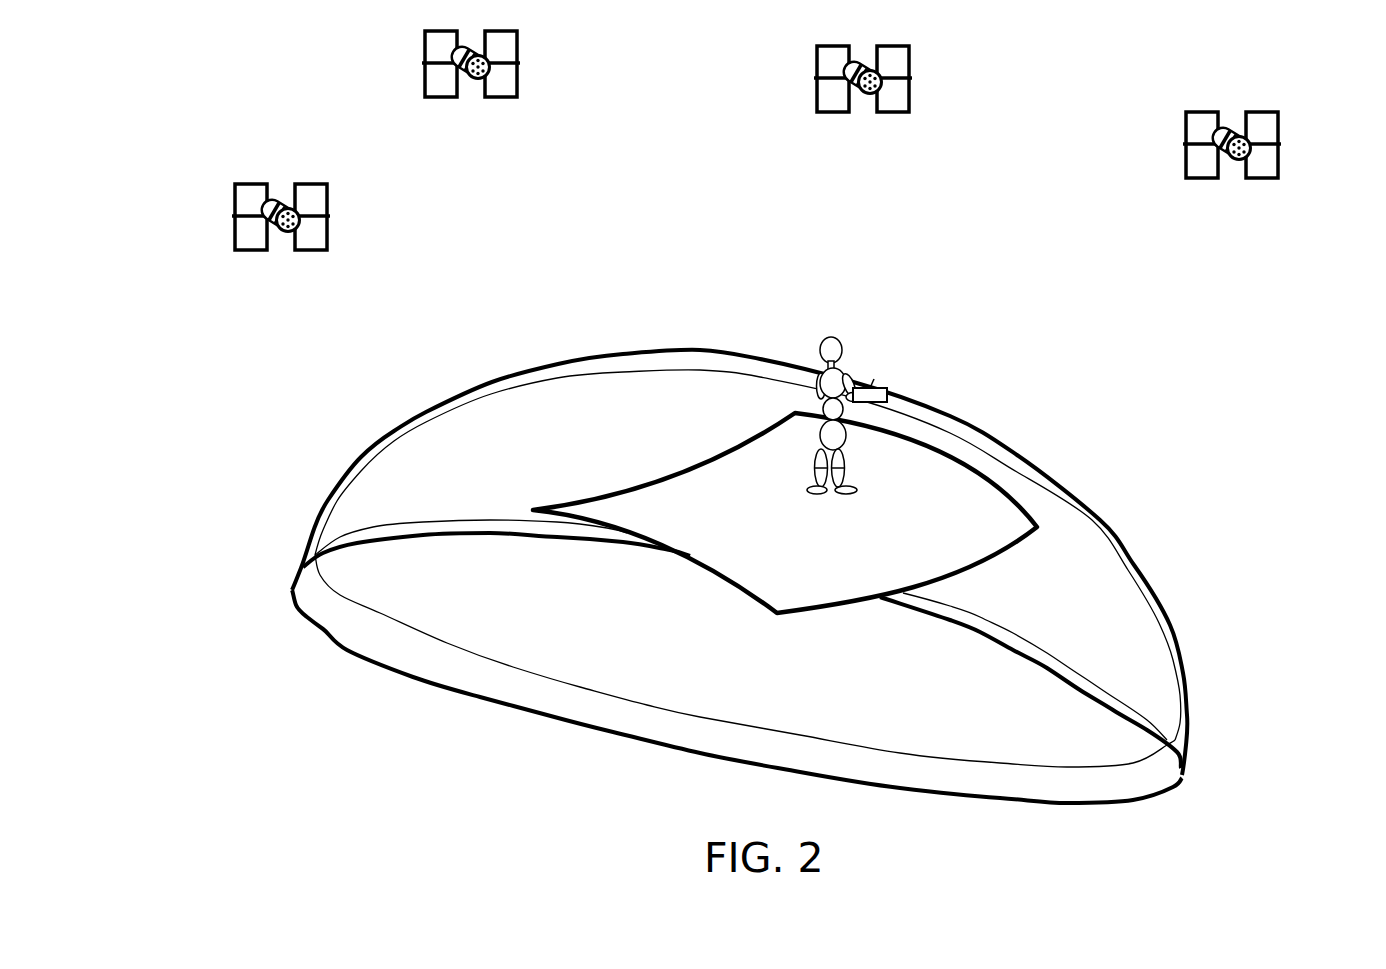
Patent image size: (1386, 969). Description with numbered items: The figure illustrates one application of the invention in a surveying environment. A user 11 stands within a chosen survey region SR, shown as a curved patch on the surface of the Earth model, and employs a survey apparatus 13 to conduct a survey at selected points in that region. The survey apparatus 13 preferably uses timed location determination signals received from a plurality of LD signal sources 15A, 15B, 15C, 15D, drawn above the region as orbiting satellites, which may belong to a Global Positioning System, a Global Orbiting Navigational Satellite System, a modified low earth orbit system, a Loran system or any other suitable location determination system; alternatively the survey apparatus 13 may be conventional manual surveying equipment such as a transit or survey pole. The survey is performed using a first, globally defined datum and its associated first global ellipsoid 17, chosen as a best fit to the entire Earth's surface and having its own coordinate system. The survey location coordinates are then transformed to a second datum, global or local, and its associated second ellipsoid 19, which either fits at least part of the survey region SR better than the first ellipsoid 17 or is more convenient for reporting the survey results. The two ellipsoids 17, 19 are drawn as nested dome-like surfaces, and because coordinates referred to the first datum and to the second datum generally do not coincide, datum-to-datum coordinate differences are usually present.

The user 11 is at (835, 350).
The survey apparatus 13 is at (887, 388).
The LD signal source 15A is at (310, 205).
The LD signal source 15B is at (500, 82).
The LD signal source 15C is at (897, 93).
The LD signal source 15D is at (1265, 163).
The survey region SR is at (972, 512).
The first (global) ellipsoid 17 is at (1105, 520).
The second ellipsoid 19 is at (1138, 567).